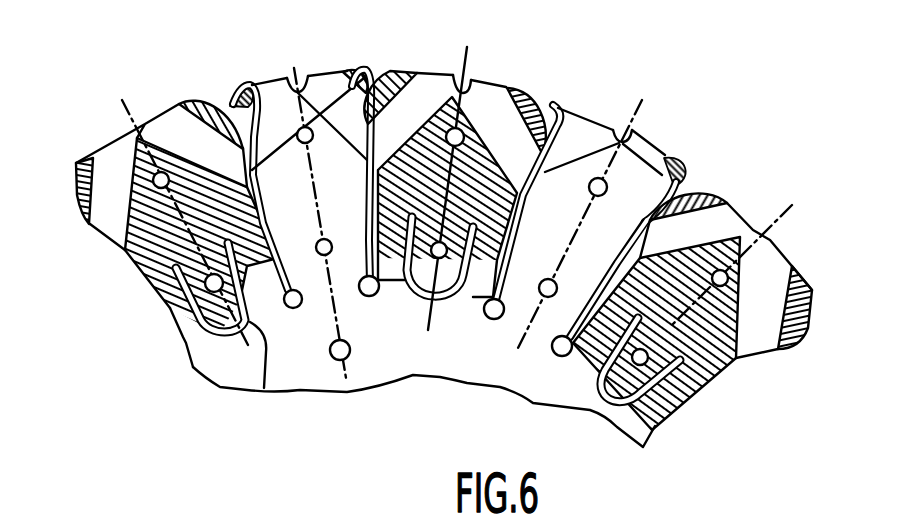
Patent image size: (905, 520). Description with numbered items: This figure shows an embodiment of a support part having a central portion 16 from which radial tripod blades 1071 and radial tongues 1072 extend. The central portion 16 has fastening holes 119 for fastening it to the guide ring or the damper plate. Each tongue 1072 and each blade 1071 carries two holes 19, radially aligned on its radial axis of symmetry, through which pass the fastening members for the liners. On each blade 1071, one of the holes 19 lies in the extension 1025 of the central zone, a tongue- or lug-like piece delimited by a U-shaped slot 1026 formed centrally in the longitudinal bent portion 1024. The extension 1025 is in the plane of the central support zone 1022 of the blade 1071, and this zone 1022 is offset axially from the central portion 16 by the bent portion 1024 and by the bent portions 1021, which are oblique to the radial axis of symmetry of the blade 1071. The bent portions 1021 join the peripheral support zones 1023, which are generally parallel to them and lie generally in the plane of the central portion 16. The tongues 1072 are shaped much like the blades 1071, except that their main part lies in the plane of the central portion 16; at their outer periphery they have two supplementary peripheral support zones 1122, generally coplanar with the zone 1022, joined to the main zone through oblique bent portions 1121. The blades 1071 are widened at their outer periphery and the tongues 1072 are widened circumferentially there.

The central portion 16 is at (527, 410).
The holes 19 is at (347, 78).
The fastening holes 119 is at (335, 358).
The bent portions 1021 is at (108, 223).
The central support zone 1022 is at (158, 282).
The peripheral support zones 1023 is at (72, 187).
The longitudinal bent portion 1024 is at (185, 318).
The extension 1025 is at (262, 390).
The U-shaped slot 1026 is at (228, 325).
The tripod blade 1071 is at (755, 207).
The tongue 1072 is at (692, 158).
The bent portions 1121 is at (297, 35).
The supplementary peripheral support zones 1122 is at (668, 152).